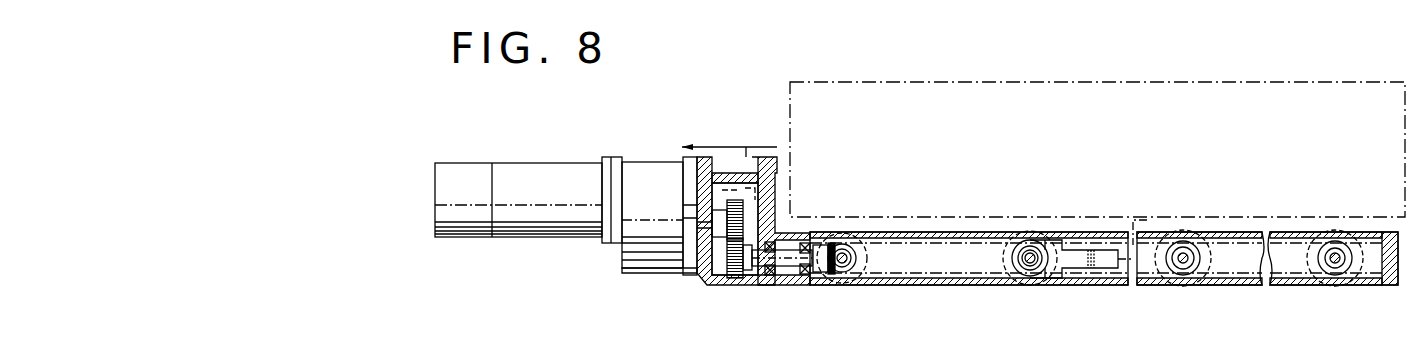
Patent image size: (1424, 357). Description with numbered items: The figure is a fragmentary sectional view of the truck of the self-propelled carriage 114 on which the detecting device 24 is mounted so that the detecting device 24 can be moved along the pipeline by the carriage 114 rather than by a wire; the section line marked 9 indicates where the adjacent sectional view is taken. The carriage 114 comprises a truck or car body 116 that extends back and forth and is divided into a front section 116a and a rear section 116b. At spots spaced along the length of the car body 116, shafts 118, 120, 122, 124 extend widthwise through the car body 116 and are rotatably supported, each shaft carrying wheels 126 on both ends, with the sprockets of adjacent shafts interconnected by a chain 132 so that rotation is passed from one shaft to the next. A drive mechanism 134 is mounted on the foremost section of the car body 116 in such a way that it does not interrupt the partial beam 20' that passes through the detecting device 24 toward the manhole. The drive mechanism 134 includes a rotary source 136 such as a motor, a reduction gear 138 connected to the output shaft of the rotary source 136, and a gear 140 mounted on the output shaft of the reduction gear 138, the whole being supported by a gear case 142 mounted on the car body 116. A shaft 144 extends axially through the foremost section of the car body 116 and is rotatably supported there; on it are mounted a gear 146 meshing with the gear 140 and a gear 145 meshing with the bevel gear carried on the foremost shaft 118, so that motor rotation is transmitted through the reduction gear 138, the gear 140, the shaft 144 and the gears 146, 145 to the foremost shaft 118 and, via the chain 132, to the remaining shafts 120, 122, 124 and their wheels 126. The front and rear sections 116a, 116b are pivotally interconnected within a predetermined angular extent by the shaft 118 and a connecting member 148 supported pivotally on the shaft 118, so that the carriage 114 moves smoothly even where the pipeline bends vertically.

The section line 9- 9 is at (430, 190).
The detecting device 24 is at (940, 78).
The self-propelled carriage 114 is at (707, 133).
The partial beam 20' is at (751, 129).
The truck or car body 116 is at (1104, 242).
The front section 116a is at (938, 283).
The rear section 116b is at (1215, 285).
The foremost shaft 118 is at (845, 246).
The shaft 120 is at (1030, 252).
The shaft 122 is at (1183, 255).
The shaft 124 is at (1333, 253).
The wheels 126 is at (1385, 250).
The chain 132 is at (947, 237).
The drive mechanism 134 is at (630, 278).
The rotary source 136 is at (520, 213).
The reduction gear 138 is at (623, 260).
The gear 140 is at (745, 215).
The gear case 142 is at (705, 278).
The shaft 144 is at (780, 256).
The gear 145 is at (825, 270).
The gear 146 is at (732, 265).
The connecting member 148 is at (1080, 262).